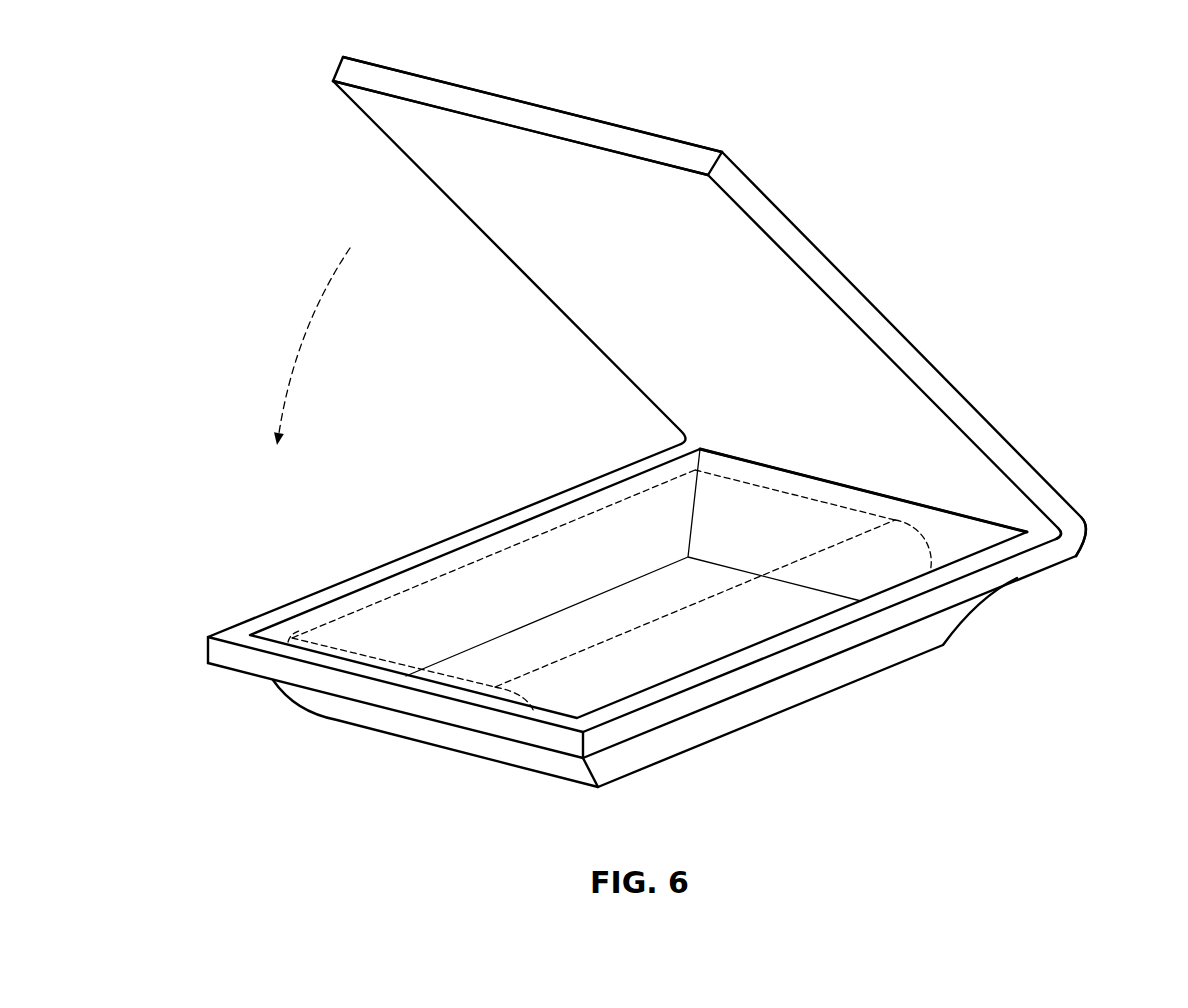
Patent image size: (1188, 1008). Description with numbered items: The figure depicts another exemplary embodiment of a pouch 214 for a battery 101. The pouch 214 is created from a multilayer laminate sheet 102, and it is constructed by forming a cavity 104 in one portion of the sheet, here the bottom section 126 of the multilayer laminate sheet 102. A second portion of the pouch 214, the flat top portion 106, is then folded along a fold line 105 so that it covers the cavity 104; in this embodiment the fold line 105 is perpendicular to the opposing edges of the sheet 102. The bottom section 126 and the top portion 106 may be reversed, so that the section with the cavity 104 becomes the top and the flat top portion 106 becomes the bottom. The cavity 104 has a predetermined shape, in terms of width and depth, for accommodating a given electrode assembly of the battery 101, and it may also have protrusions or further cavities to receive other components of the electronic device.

The pouch 214 is at (277, 72).
The multilayer laminate sheet 102 is at (930, 298).
The top portion 106 is at (632, 140).
The battery 101 is at (394, 594).
The cavity 104 is at (570, 620).
The fold line 105 is at (1045, 527).
The bottom section 126 is at (437, 732).